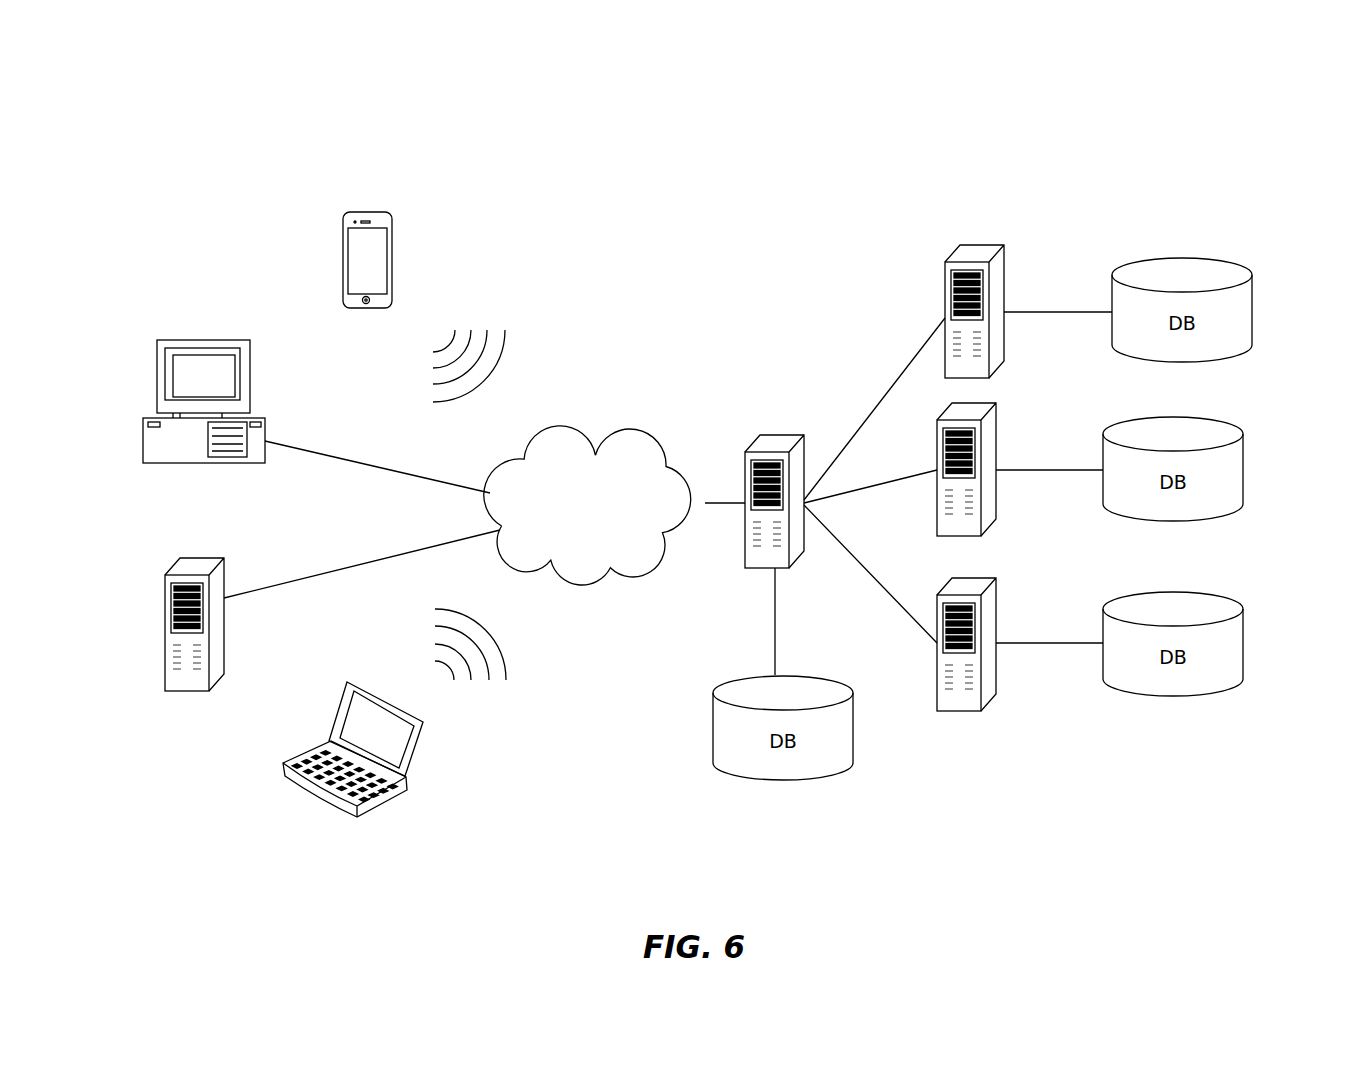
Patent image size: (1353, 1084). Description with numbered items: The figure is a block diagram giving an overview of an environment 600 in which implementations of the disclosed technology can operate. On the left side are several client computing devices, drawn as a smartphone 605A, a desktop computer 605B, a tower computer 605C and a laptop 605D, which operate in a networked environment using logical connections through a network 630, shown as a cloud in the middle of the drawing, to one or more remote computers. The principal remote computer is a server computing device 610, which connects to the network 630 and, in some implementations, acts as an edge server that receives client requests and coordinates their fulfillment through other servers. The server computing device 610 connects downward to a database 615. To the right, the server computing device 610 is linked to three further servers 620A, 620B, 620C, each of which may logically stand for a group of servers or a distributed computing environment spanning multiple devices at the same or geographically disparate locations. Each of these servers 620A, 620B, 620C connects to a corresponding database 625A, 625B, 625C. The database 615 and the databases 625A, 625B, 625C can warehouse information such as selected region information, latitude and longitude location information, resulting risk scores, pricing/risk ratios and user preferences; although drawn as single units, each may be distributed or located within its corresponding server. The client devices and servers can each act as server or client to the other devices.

The environment 600 is at (1062, 131).
The client computing device 605A is at (380, 212).
The client computing device 605B is at (240, 340).
The client computing device 605C is at (223, 563).
The client computing device 605D is at (418, 747).
The server computing device 610 is at (785, 433).
The database 615 is at (833, 677).
The server 620A is at (1003, 247).
The server 620B is at (995, 405).
The server 620C is at (995, 580).
The database 625A is at (1178, 258).
The database 625B is at (1165, 417).
The database 625C is at (1165, 592).
The network 630 is at (650, 429).